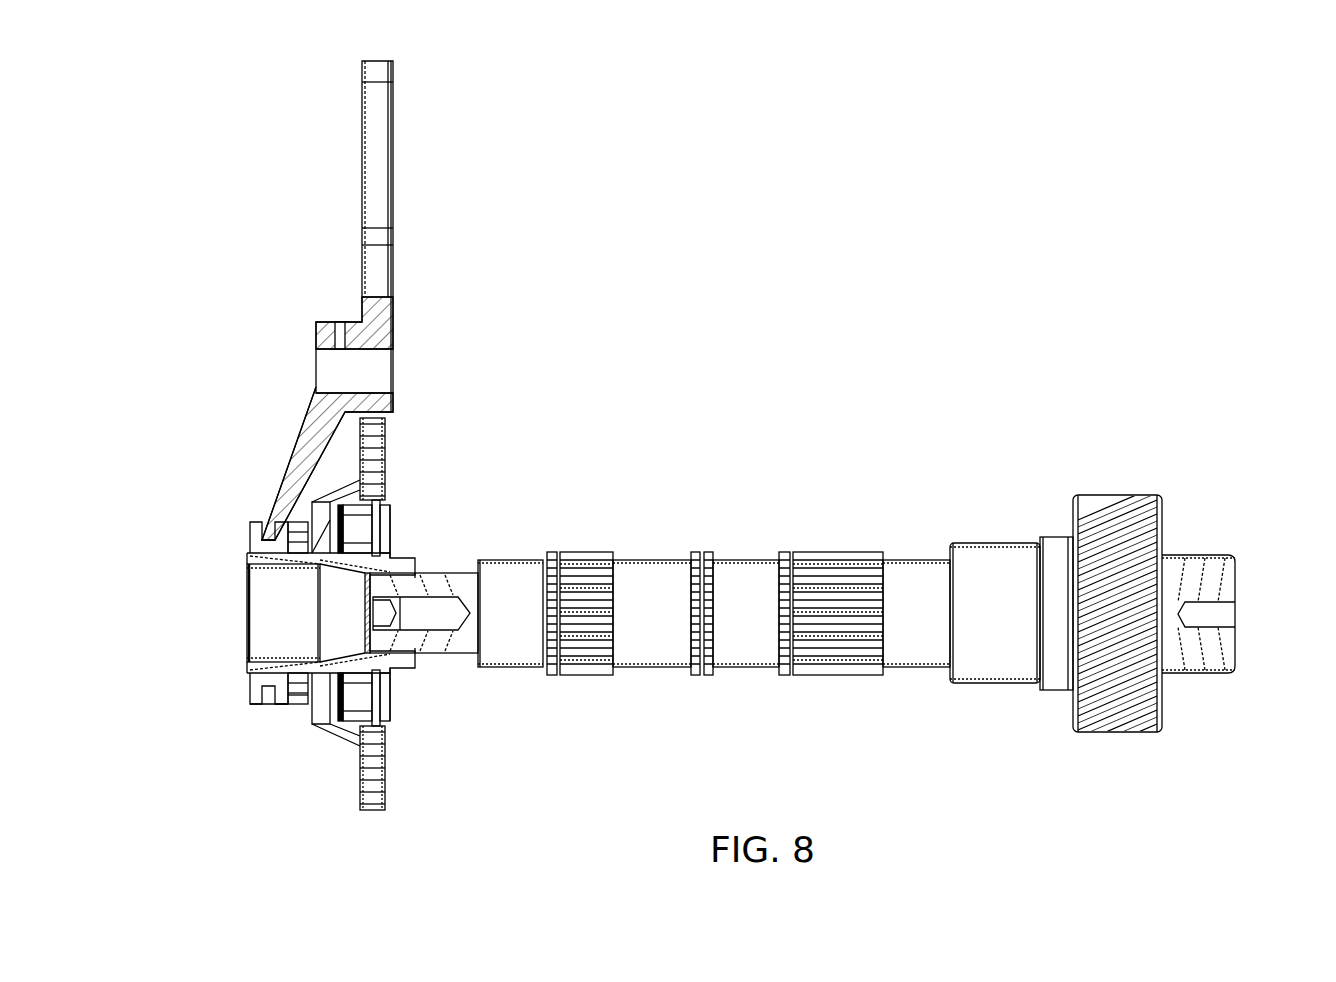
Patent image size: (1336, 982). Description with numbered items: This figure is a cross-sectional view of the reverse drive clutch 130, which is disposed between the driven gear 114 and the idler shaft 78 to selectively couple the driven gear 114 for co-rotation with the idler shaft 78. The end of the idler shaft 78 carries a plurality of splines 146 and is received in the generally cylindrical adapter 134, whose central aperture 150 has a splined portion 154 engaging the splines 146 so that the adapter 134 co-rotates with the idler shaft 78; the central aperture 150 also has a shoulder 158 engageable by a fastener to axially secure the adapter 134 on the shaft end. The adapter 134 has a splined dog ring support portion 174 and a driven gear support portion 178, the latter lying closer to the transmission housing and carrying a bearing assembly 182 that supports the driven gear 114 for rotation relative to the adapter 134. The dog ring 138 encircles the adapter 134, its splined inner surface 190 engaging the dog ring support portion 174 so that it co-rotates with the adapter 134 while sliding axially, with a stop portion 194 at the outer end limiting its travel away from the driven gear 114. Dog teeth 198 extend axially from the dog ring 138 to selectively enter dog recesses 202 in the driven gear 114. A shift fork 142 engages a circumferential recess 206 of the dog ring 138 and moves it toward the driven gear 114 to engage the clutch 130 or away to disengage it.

The idler shaft 78 is at (1250, 575).
The driven gear 114 is at (387, 430).
The reverse drive clutch 130 is at (281, 614).
The adapter 134 is at (247, 668).
The dog ring 138 is at (283, 705).
The shift fork 142 is at (290, 450).
The splines 146 is at (846, 629).
The central aperture 150 is at (297, 614).
The splined portion 154 is at (420, 598).
The shoulder 158 is at (247, 680).
The dog ring support portion 174 is at (362, 500).
The driven gear support portion 178 is at (400, 676).
The bearing assembly 182 is at (392, 515).
The inner surface 190 is at (247, 578).
The stop portion 194 is at (247, 553).
The dog teeth 198 is at (298, 705).
The dog recesses 202 is at (318, 720).
The circumferential recess 206 is at (252, 711).